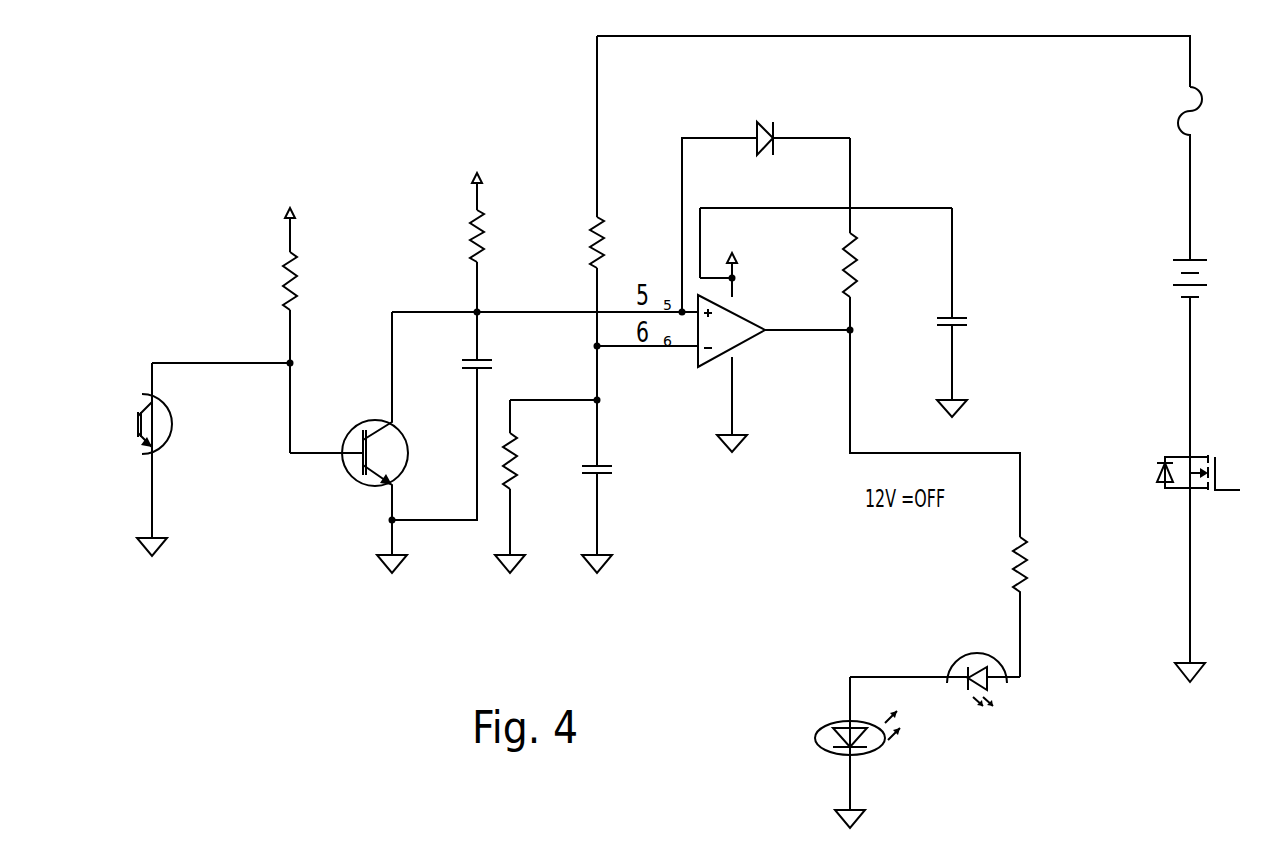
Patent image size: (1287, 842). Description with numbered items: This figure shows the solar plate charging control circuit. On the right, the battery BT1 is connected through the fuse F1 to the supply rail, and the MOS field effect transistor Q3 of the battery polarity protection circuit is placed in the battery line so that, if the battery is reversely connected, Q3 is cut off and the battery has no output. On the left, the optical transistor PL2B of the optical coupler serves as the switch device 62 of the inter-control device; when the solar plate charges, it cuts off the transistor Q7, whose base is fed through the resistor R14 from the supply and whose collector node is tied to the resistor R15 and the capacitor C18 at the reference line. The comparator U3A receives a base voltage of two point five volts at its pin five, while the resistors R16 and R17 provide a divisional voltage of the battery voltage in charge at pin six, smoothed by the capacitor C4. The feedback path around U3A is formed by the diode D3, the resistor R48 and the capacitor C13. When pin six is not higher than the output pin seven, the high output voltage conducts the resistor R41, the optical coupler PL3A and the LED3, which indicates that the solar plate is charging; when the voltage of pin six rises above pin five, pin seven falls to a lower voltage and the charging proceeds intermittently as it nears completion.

The switch device 62 is at (206, 404).
The optical transistor PL2B is at (213, 459).
The resistor 20K R14 is at (293, 316).
The resistor 10K R15 is at (474, 228).
The resistor R16 is at (625, 218).
The resistor R17 is at (548, 485).
The resistor 475K R48 is at (892, 337).
The resistor R41 is at (1035, 605).
The capacitor 1U/16V C4 is at (629, 486).
The capacitor 104 C18 is at (461, 416).
The capacitor 104 C13 is at (968, 312).
The transistor Q7 is at (373, 442).
The MOS field effect transistor Q3 is at (1206, 547).
The comparator U3A is at (823, 368).
The diode CD4148 D3 is at (766, 185).
The fuse 5A F1 is at (1194, 159).
The battery 12V BT1 is at (1209, 341).
The optical coupler PL3A is at (947, 688).
The LED LED3 is at (810, 752).